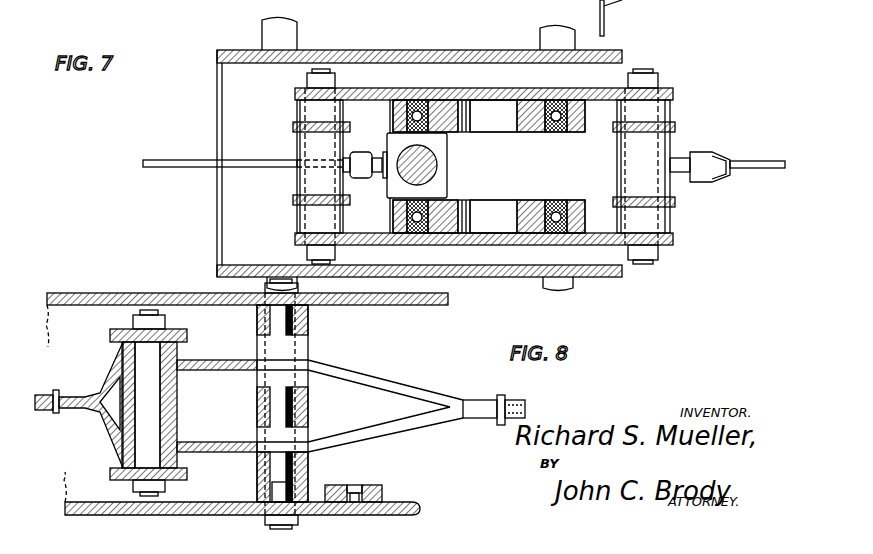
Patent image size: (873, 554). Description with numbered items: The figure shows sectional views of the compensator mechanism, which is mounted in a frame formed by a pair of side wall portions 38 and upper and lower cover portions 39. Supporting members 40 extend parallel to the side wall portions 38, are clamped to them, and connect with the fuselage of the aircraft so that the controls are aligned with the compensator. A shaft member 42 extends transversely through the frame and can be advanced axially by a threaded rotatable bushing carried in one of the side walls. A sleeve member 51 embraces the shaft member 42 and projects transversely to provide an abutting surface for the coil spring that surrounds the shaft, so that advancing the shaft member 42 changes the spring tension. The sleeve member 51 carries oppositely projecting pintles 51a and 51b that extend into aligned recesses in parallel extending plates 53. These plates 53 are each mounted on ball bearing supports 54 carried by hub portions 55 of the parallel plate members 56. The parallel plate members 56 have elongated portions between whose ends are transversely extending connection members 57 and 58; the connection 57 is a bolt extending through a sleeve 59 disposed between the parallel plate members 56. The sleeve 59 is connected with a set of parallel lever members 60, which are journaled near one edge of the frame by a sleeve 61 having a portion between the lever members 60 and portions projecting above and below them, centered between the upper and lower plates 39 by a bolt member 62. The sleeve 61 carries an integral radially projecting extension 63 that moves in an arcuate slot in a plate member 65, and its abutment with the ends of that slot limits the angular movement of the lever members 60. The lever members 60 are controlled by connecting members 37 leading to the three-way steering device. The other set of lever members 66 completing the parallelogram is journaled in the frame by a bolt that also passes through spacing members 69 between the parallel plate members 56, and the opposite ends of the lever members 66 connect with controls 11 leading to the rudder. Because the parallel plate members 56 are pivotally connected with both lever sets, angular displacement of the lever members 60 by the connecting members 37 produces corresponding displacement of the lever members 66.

In FIG. 7, the controls 11 is at (173, 168).
In FIG. 7, the connecting members 37 is at (742, 170).
In FIG. 8, the connecting members 37 is at (56, 392).
In FIG. 7, the side wall portions 38 is at (228, 104).
In FIG. 8, the side wall portions 38 is at (407, 470).
In FIG. 7, the upper and lower cover portions 39 is at (412, 57).
In FIG. 8, the upper and lower cover portions 39 is at (443, 306).
In FIG. 7, the supporting members 40 is at (280, 37).
In FIG. 7, the shaft member 42 is at (437, 165).
In FIG. 7, the sleeve member 51 is at (440, 199).
In FIG. 7, the pintle 51a is at (420, 96).
In FIG. 7, the pintle 51b is at (414, 230).
In FIG. 7, the plates 53 is at (480, 132).
In FIG. 7, the ball bearing supports 54 is at (592, 92).
In FIG. 7, the hub portions 55 is at (462, 95).
In FIG. 7, the parallel plate members 56 is at (342, 87).
In FIG. 8, the parallel plate members 56 is at (187, 335).
In FIG. 7, the transversely extending connection 57 is at (660, 88).
In FIG. 8, the transversely extending connection 57 is at (150, 352).
In FIG. 7, the transversely extending connection member 58 is at (310, 100).
In FIG. 7, the sleeve 59 is at (728, 152).
In FIG. 8, the sleeve 59 is at (118, 412).
In FIG. 7, the parallel lever members 60 is at (658, 150).
In FIG. 8, the parallel lever members 60 is at (378, 386).
In FIG. 8, the sleeve 61 is at (308, 332).
In FIG. 8, the bolt member 62 is at (308, 320).
In FIG. 8, the radially projecting extension 63 is at (262, 512).
In FIG. 8, the plate member 65 is at (372, 486).
In FIG. 7, the lever members 66 is at (297, 135).
In FIG. 7, the spacing members 69 is at (305, 205).